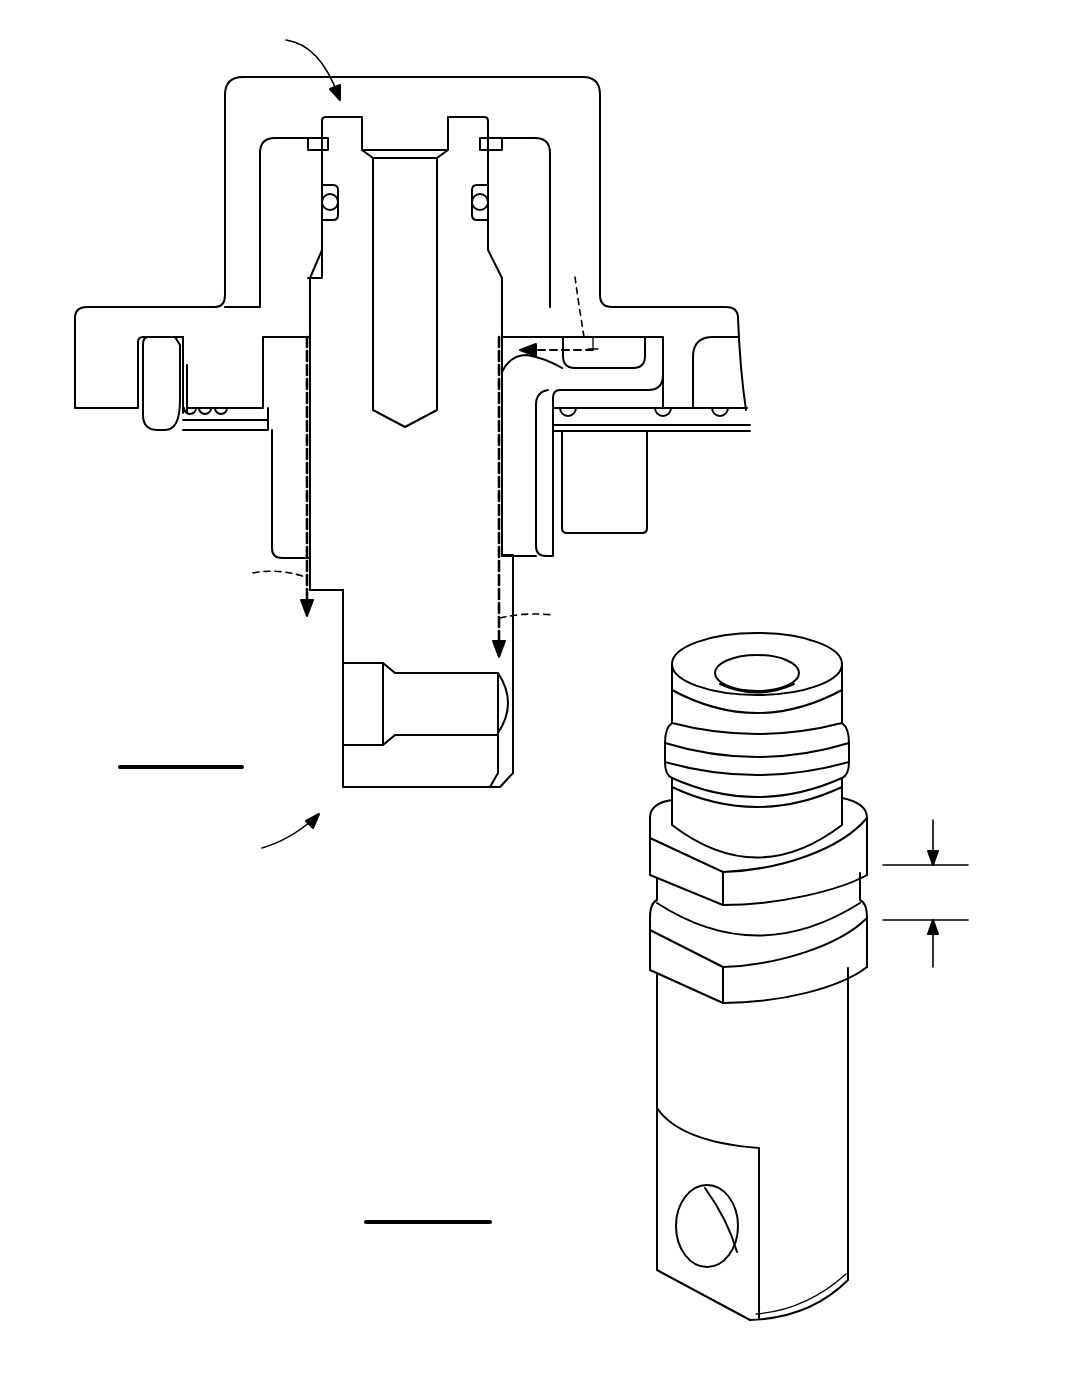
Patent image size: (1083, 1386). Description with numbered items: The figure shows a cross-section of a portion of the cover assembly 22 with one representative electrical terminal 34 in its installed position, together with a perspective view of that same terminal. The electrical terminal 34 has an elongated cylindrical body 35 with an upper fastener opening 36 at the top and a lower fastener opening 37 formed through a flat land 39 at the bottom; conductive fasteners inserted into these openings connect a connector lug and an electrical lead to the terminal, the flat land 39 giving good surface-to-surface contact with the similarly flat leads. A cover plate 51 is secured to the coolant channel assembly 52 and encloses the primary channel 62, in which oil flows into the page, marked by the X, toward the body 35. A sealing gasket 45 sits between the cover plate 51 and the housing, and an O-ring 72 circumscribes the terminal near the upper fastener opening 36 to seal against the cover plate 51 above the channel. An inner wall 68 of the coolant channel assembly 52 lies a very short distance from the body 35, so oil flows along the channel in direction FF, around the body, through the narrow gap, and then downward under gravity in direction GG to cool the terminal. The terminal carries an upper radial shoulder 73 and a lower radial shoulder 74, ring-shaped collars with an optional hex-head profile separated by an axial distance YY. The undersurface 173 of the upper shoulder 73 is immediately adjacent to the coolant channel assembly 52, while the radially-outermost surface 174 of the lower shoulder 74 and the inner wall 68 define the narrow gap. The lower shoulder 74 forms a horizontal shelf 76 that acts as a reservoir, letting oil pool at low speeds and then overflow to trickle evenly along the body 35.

In FIG. 6, the cover assembly 22 is at (668, 58).
In FIG. 6, the electrical terminal 34 is at (255, 608).
In FIG. 7, the electrical terminal 34 is at (937, 672).
In FIG. 6, the body 35 is at (435, 573).
In FIG. 7, the body 35 is at (822, 1162).
In FIG. 6, the upper fastener opening 36 is at (396, 130).
In FIG. 7, the upper fastener opening 36 is at (773, 665).
In FIG. 6, the lower fastener opening 37 is at (360, 710).
In FIG. 7, the lower fastener opening 37 is at (697, 1226).
In FIG. 6, the land 39 is at (343, 650).
In FIG. 7, the land 39 is at (675, 1156).
In FIG. 6, the sealing gasket 45 is at (150, 410).
In FIG. 6, the cover plate 51 is at (545, 193).
In FIG. 6, the coolant channel assembly 52 is at (280, 500).
In FIG. 6, the primary channel 62 is at (640, 350).
In FIG. 6, the inner wall 68 is at (488, 505).
In FIG. 6, the O-ring 72 is at (482, 203).
In FIG. 7, the O-ring 72 is at (843, 752).
In FIG. 6, the upper radial shoulder 73 is at (310, 305).
In FIG. 7, the upper radial shoulder 73 is at (860, 820).
In FIG. 6, the lower radial shoulder 74 is at (312, 400).
In FIG. 7, the lower radial shoulder 74 is at (870, 968).
In FIG. 7, the shelf 76 is at (652, 907).
In FIG. 7, the undersurface 173 is at (650, 868).
In FIG. 7, the radially-outermost surface 174 is at (815, 982).